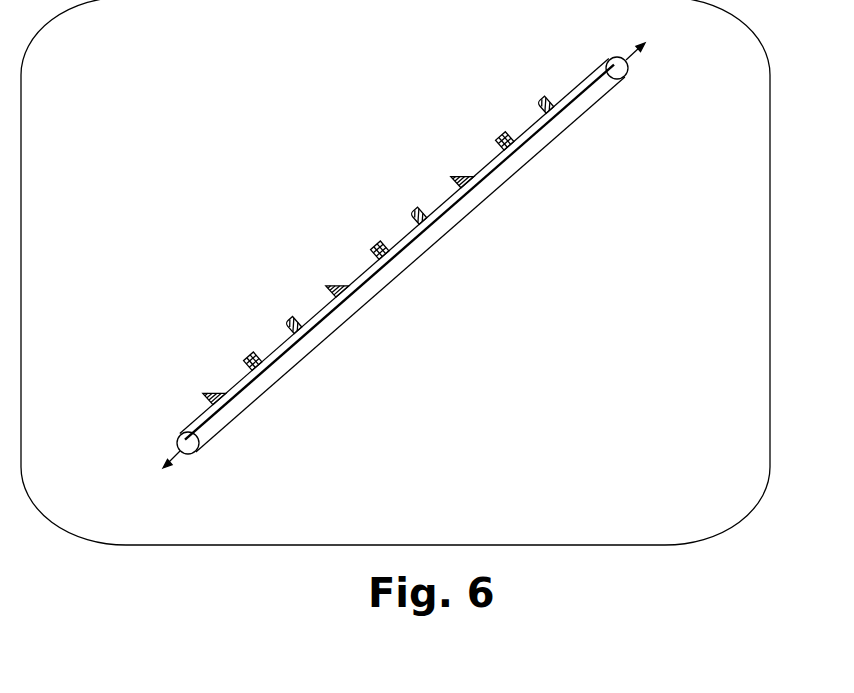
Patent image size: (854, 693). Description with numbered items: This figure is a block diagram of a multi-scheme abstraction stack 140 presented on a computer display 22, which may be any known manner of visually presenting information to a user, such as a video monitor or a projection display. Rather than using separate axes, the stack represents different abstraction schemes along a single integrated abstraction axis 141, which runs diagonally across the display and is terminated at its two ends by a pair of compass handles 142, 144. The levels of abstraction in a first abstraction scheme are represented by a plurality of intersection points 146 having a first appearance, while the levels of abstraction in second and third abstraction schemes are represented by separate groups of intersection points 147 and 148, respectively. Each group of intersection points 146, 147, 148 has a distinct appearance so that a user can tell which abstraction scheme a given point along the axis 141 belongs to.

The computer display 22 is at (636, 549).
The multi-scheme abstraction stack 140 is at (380, 250).
The single integrated abstraction axis 141 is at (178, 455).
The compass handle 142 is at (611, 60).
The compass handle 144 is at (199, 452).
The intersection points 146 is at (289, 314).
The intersection points 147 is at (250, 350).
The intersection points 148 is at (208, 384).